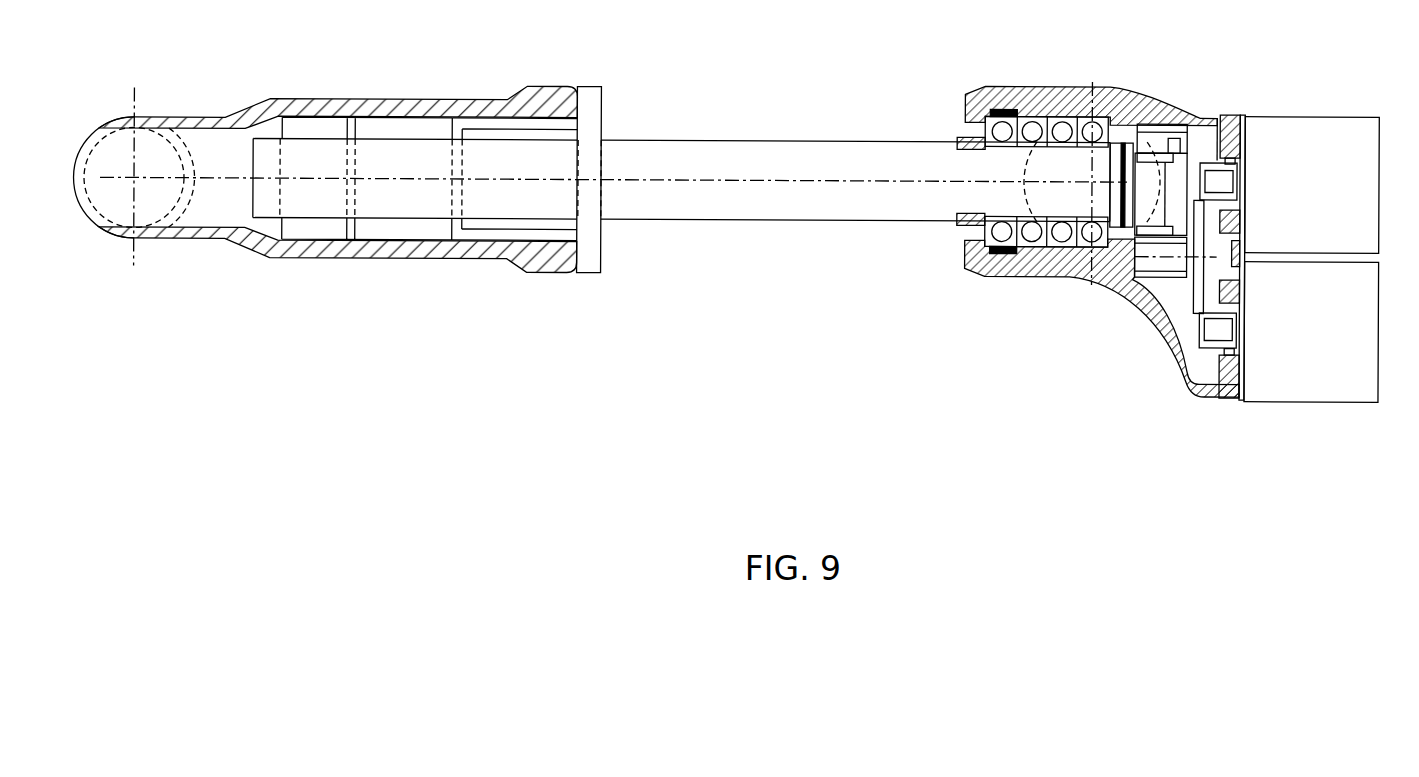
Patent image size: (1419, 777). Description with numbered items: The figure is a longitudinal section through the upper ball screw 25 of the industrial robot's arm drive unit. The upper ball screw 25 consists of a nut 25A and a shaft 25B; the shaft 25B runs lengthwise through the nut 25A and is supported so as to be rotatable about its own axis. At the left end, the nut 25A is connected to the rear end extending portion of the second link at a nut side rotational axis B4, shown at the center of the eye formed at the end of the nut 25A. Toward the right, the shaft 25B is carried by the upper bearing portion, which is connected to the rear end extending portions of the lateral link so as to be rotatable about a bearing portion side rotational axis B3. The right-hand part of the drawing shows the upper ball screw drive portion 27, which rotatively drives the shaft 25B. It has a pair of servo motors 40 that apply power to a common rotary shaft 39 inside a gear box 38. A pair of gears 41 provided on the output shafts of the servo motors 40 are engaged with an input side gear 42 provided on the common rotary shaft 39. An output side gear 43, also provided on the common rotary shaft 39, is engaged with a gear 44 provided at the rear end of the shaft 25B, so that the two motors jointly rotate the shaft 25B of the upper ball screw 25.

The upper ball screw 25 is at (592, 177).
The nut 25A is at (510, 101).
The shaft 25B is at (793, 212).
The nut side rotational axis B4 is at (134, 180).
The bearing portion side rotational axis B3 is at (1083, 179).
The gear box 38 is at (1173, 290).
The common rotary shaft 39 is at (1145, 258).
The gear 44 is at (1160, 125).
The output side gear 43 is at (1158, 272).
The input side gear 42 is at (1198, 288).
The gear 41 is at (1200, 162).
The servo motor 40 is at (1292, 122).
The upper ball screw drive portion 27 is at (1317, 256).